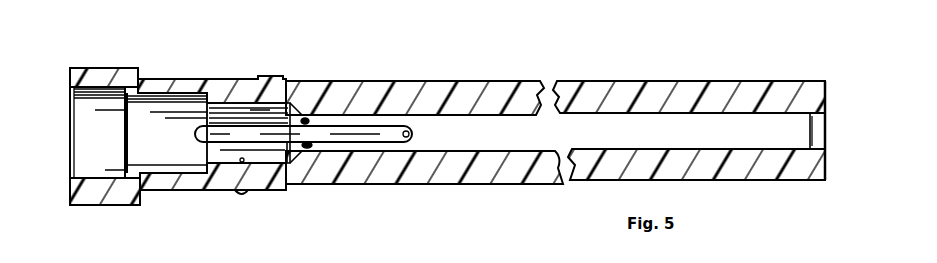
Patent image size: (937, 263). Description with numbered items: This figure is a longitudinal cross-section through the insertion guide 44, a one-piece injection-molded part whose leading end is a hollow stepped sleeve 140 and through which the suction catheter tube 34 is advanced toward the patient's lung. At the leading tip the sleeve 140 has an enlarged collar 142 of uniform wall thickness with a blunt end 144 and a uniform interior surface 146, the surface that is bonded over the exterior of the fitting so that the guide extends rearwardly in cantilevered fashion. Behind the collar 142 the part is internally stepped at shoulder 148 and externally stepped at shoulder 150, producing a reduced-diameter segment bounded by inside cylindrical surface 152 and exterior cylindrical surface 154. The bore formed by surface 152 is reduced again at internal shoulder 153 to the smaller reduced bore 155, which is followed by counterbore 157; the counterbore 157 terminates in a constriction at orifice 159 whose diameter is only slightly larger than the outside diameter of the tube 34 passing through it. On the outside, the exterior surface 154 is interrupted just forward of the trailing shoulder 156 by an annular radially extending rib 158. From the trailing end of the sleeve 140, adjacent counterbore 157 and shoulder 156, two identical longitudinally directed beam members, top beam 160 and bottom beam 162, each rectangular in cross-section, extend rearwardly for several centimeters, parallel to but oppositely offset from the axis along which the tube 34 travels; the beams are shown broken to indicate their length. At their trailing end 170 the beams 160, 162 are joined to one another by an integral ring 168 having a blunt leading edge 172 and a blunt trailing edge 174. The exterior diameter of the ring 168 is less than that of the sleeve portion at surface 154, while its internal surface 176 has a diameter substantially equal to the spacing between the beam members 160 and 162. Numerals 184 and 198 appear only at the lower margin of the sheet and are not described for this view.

The suction catheter tube 34 is at (331, 125).
The insertion guide 44 is at (451, 77).
The hollow stepped sleeve 140 is at (224, 64).
The enlarged collar 142 is at (100, 67).
The blunt end 144 is at (71, 72).
The interior surface 146 is at (100, 132).
The internal shoulder 148 is at (85, 172).
The external shoulder 150 is at (140, 79).
The inside cylindrical surface 152 is at (167, 130).
The internal shoulder 153 is at (193, 178).
The exterior cylindrical surface 154 is at (160, 80).
The reduced bore 155 is at (243, 164).
The trailing shoulder 156 is at (285, 81).
The counterbore 157 is at (298, 112).
The annular radially extending rib 158 is at (266, 76).
The orifice 159 is at (317, 145).
The top beam member 160 is at (500, 92).
The bottom beam member 162 is at (510, 173).
The integral ring 168 is at (836, 150).
The trailing end 170 is at (805, 88).
The blunt leading edge 172 is at (800, 150).
The blunt trailing edge 174 is at (832, 108).
The internal surface of ring 176 is at (810, 128).
The element 184 is at (612, 261).
The element 198 is at (670, 262).